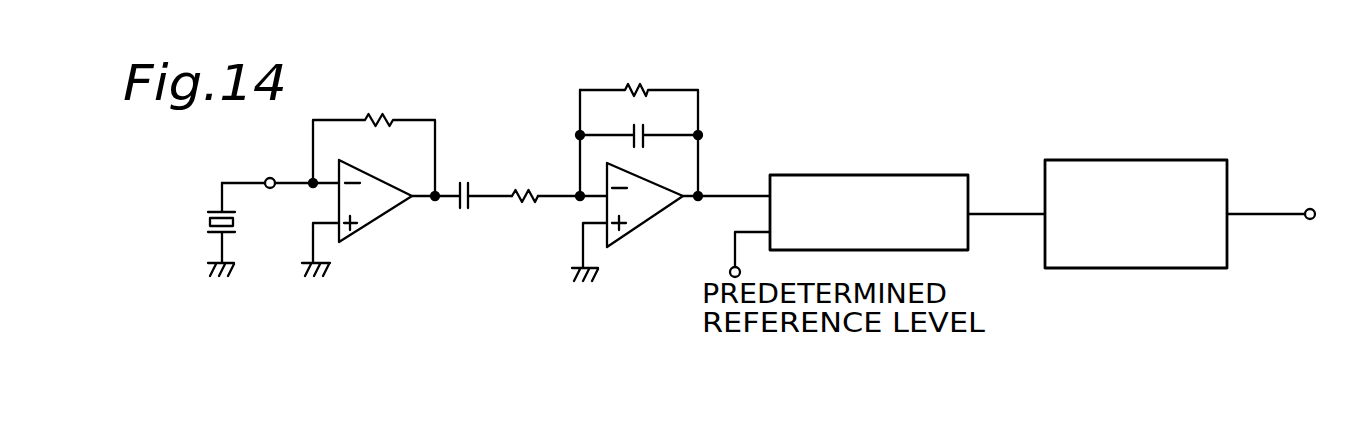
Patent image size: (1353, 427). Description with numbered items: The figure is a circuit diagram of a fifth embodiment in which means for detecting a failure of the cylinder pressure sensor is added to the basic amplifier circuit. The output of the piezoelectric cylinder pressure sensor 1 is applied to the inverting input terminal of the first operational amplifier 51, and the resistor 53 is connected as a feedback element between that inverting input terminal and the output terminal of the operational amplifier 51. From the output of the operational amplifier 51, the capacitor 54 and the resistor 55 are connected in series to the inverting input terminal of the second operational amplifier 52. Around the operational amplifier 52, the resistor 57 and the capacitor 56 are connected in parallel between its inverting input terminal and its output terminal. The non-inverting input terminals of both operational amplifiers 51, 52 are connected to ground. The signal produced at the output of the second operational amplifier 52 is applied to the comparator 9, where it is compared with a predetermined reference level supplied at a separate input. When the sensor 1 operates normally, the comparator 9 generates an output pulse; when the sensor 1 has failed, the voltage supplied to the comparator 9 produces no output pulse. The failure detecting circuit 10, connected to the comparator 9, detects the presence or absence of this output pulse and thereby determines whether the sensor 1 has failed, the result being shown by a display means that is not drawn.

The piezoelectric cylinder pressure sensor 1 is at (238, 223).
The operational amplifier 51 is at (370, 226).
The operational amplifier 52 is at (647, 225).
The resistor 53 is at (382, 115).
The capacitor 54 is at (462, 180).
The resistor 55 is at (528, 183).
The capacitor 56 is at (647, 108).
The resistor 57 is at (642, 83).
The comparator 9 is at (870, 175).
The failure detecting circuit 10 is at (1142, 160).